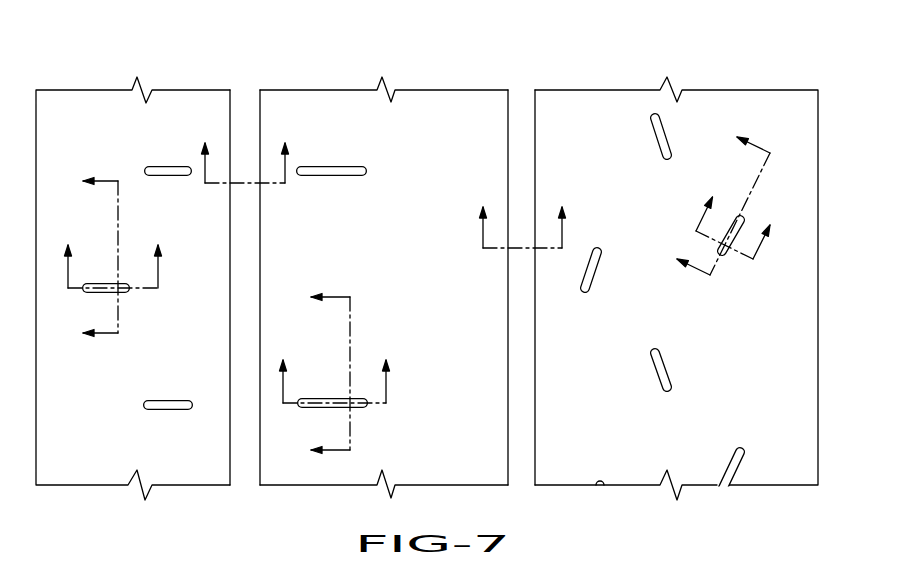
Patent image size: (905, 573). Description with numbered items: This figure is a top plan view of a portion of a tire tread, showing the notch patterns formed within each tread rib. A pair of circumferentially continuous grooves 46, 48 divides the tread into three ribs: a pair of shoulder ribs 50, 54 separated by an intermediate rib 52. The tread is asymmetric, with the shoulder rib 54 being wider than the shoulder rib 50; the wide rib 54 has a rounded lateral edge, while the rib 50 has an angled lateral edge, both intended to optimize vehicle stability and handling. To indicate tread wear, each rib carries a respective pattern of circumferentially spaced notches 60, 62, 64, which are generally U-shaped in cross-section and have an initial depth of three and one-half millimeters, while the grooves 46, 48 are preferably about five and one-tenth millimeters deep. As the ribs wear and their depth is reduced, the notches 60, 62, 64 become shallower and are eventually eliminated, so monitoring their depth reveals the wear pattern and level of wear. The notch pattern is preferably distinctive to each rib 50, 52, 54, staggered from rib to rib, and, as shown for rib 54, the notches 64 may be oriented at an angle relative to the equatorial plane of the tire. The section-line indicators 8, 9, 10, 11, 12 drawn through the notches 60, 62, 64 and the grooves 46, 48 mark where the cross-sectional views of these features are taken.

The shoulder rib 50 is at (101, 93).
The intermediate rib 52 is at (341, 93).
The shoulder rib 54 is at (618, 93).
The circumferentially continuous groove 46 is at (242, 108).
The circumferentially continuous groove 48 is at (518, 108).
The notch 60 is at (122, 291).
The notch 62 is at (330, 407).
The notch 64 is at (724, 253).
The section line 8- 8 is at (320, 374).
The section line 9- 9 is at (334, 368).
The section line 10- 10 is at (416, 257).
The section line 11- 11 is at (411, 203).
The section line 12- 12 is at (381, 182).